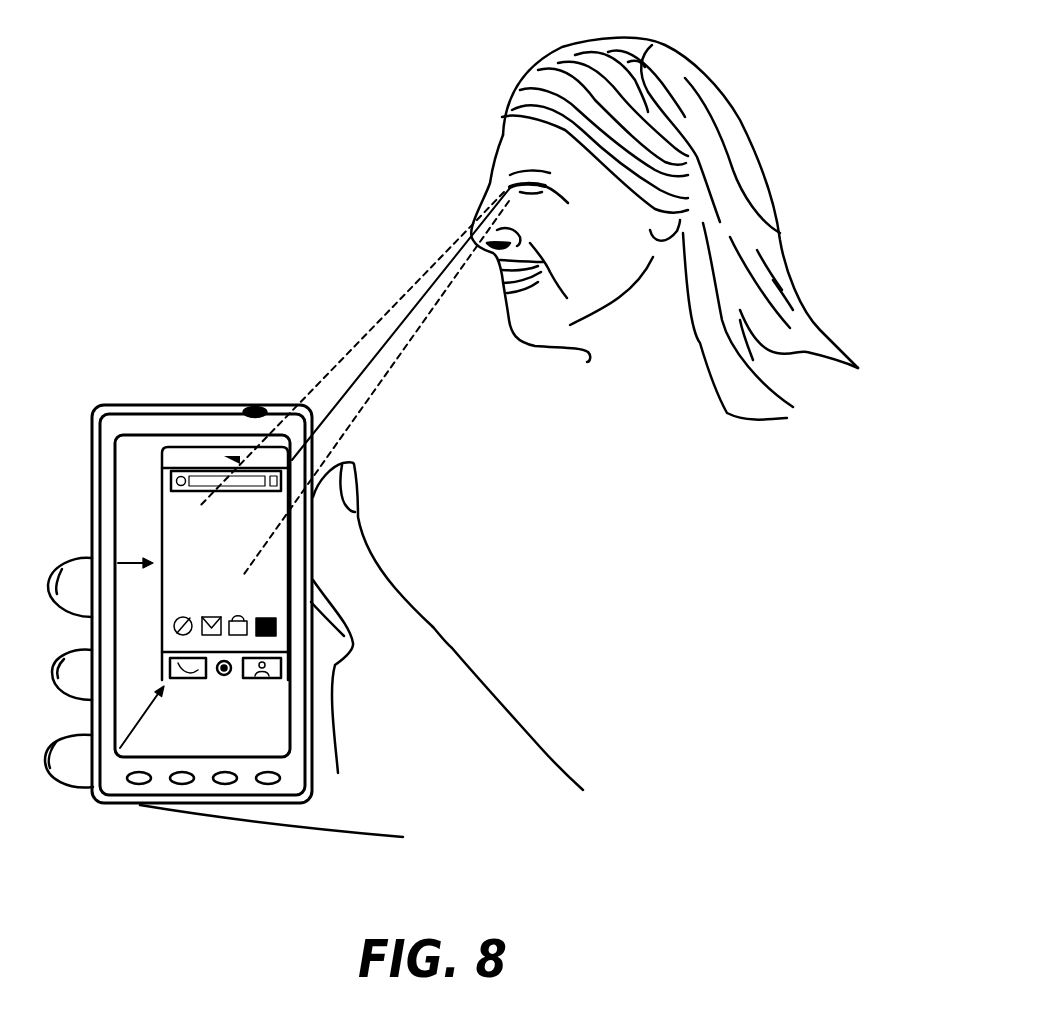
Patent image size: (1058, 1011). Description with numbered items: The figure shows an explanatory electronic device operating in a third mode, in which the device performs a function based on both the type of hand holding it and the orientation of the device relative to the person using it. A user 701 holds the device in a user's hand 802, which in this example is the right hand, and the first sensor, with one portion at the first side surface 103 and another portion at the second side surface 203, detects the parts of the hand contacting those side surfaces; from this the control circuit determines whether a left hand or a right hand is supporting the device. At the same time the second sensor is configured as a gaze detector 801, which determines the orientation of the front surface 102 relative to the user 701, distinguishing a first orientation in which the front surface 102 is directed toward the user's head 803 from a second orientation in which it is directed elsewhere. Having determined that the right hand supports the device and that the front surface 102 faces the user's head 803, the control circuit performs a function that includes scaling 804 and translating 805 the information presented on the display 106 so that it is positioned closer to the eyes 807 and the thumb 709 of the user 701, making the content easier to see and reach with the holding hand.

The front surface 102 is at (133, 420).
The first side surface 103 is at (330, 722).
The display 106 is at (270, 710).
The second side surface 203 is at (80, 458).
The user 701 is at (480, 124).
The thumb 709 is at (340, 555).
The gaze detector 801 is at (258, 410).
The user's hand 802 is at (470, 672).
The user's head 803 is at (673, 113).
The scaling 804 is at (150, 712).
The translating 805 is at (118, 563).
The eyes 807 is at (557, 192).